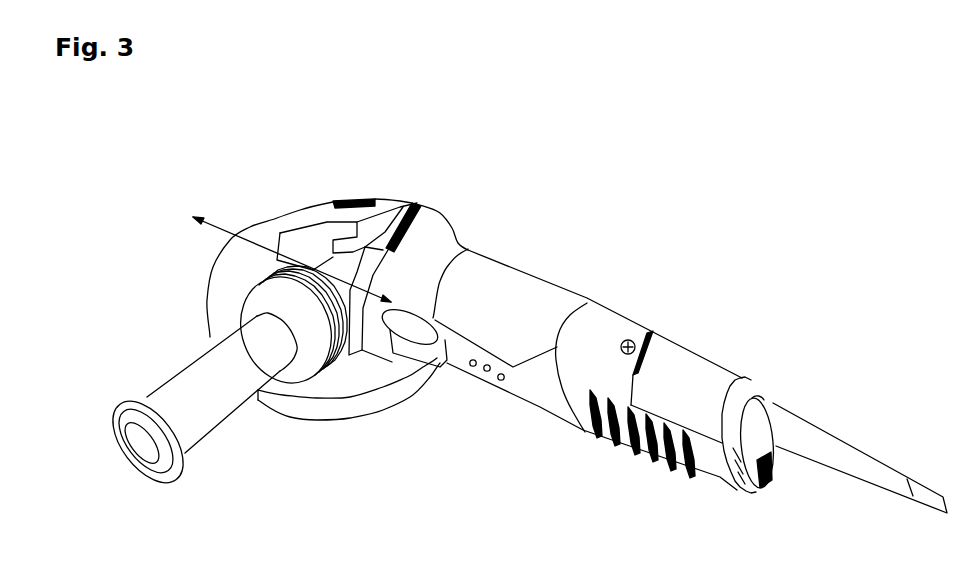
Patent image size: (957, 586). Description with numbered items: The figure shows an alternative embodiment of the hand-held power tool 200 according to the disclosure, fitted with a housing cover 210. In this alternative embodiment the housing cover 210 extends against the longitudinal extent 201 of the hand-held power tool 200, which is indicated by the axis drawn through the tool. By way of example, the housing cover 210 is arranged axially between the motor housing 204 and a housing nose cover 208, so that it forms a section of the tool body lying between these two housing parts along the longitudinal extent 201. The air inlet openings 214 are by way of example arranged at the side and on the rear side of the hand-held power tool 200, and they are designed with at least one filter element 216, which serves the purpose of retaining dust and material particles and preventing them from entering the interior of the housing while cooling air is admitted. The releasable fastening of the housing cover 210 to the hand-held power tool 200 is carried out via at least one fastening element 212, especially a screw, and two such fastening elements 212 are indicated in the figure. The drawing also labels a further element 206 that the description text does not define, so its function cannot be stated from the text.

The hand-held power tool 200 is at (724, 226).
The longitudinal extent 201 is at (218, 228).
The motor housing 204 is at (470, 230).
The rear end cap / collar 206 is at (748, 376).
The housing nose cover 208 is at (765, 490).
The housing cover 210 is at (605, 293).
The fastening element 212 is at (650, 331).
The air inlet openings 214 is at (599, 438).
The filter element 216 is at (646, 462).